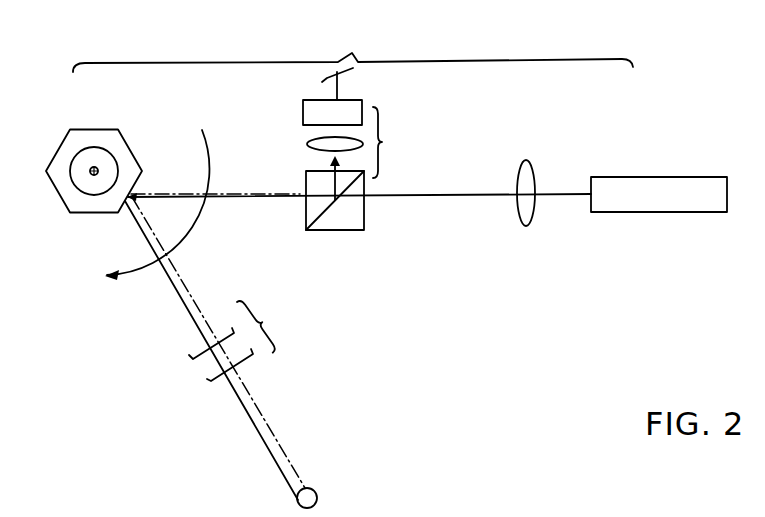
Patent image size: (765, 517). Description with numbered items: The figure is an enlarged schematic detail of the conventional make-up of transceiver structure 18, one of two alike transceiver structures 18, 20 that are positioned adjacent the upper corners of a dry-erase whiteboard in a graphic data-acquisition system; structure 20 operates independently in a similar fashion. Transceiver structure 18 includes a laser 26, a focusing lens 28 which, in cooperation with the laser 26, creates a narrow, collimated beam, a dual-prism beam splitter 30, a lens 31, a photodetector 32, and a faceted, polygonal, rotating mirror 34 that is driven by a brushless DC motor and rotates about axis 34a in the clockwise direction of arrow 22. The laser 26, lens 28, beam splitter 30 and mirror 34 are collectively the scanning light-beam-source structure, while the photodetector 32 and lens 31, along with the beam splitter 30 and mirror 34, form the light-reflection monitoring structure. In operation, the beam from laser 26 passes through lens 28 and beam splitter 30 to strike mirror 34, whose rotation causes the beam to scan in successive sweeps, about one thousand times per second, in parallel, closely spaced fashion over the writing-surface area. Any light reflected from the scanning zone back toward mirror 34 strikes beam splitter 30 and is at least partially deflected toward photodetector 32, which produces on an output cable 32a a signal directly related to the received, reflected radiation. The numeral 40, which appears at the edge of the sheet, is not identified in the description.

The transceiver structure 18 is at (301, 48).
The transceiver structure 20 is at (715, 514).
The arrow 22 is at (203, 215).
The laser 26 is at (635, 177).
The focusing lens 28 is at (535, 178).
The dual-prism beam splitter 30 is at (365, 213).
The lens 31 is at (313, 152).
The photodetector 32 is at (303, 110).
The output cable 32a is at (339, 84).
The rotating mirror 34 is at (98, 128).
The axis 34a is at (96, 170).
The scan line 40 is at (493, 514).